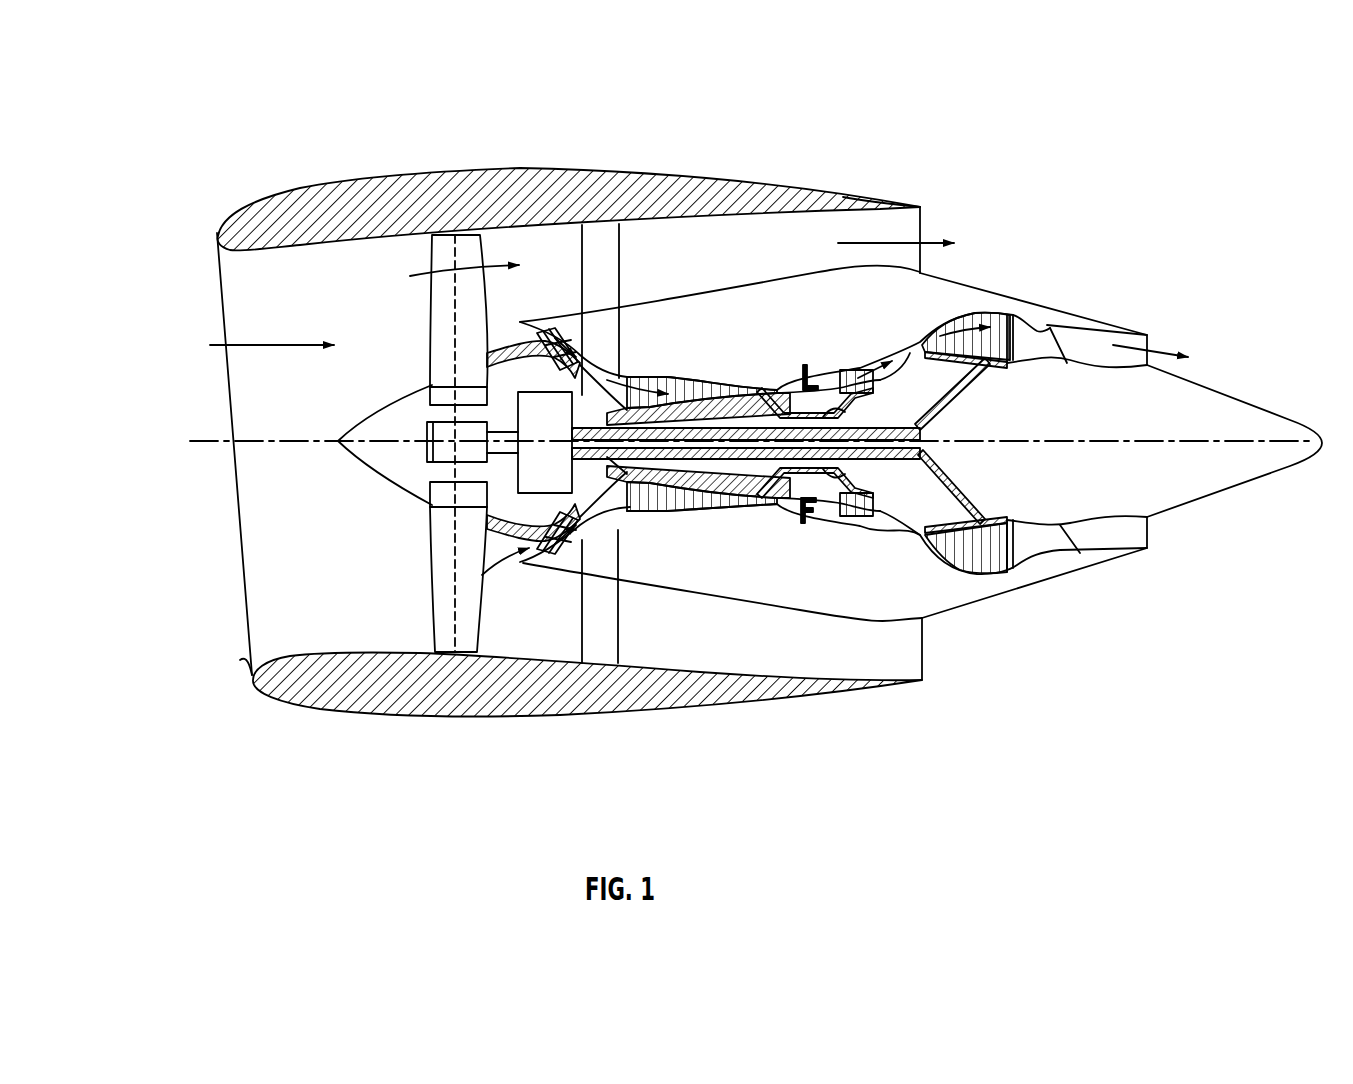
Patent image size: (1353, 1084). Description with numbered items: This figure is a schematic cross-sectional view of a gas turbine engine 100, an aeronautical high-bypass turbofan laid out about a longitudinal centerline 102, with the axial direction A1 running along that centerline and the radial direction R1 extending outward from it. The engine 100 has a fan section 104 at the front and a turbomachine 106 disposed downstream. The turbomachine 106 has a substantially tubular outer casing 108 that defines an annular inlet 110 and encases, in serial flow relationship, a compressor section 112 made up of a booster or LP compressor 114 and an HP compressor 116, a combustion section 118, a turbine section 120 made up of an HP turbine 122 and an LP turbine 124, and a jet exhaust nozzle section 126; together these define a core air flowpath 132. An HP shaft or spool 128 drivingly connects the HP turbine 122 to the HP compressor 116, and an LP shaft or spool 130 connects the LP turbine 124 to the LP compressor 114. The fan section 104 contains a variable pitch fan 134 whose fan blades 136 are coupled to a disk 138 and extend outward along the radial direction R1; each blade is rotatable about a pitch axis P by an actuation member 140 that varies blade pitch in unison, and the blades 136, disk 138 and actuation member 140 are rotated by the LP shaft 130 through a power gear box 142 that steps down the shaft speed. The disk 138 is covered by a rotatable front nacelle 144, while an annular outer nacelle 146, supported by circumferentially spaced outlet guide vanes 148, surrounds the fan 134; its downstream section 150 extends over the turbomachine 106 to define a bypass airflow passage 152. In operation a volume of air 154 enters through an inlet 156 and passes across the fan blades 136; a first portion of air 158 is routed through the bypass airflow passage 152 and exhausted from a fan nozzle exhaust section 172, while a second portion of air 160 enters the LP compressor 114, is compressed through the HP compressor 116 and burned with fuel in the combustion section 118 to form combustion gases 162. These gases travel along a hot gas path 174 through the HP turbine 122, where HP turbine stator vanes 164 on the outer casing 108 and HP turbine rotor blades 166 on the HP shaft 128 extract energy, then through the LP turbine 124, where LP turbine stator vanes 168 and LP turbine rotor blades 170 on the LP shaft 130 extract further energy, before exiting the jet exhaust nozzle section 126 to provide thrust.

The gas turbine engine 100 is at (1065, 186).
The longitudinal centerline 102 is at (1088, 440).
The fan section 104 is at (478, 139).
The turbomachine 106 is at (790, 335).
The outer casing 108 is at (777, 608).
The annular inlet 110 is at (520, 562).
The compressor section 112 is at (660, 369).
The LP compressor 114 is at (586, 521).
The HP compressor 116 is at (648, 499).
The combustion section 118 is at (820, 512).
The turbine section 120 is at (884, 345).
The HP turbine 122 is at (933, 503).
The LP turbine 124 is at (1003, 574).
The jet exhaust nozzle section 126 is at (1067, 559).
The HP shaft or spool 128 is at (842, 416).
The LP shaft or spool 130 is at (930, 427).
The core air flowpath 132 is at (893, 542).
The variable pitch fan 134 is at (394, 500).
The fan blades 136 is at (427, 593).
The disk 138 is at (447, 398).
The actuation member 140 is at (427, 425).
The power gear box 142 is at (560, 415).
The front nacelle 144 is at (340, 442).
The outer nacelle 146 is at (445, 705).
The outlet guide vanes 148 is at (620, 255).
The downstream section 150 is at (843, 197).
The bypass airflow passage 152 is at (720, 281).
The volume of air 154 is at (272, 343).
The inlet 156 is at (241, 660).
The first portion of air 158 is at (445, 272).
The second portion of air 160 is at (503, 337).
The combustion gases 162 is at (862, 377).
The HP turbine stator vanes 164 is at (837, 518).
The HP turbine rotor blades 166 is at (917, 490).
The LP turbine stator vanes 168 is at (927, 557).
The LP turbine rotor blades 170 is at (940, 560).
The fan nozzle exhaust section 172 is at (910, 230).
The hot gas path 174 is at (910, 344).
The pitch axis P is at (457, 250).
The radial direction R1 is at (92, 306).
The axial direction A1 is at (814, 793).